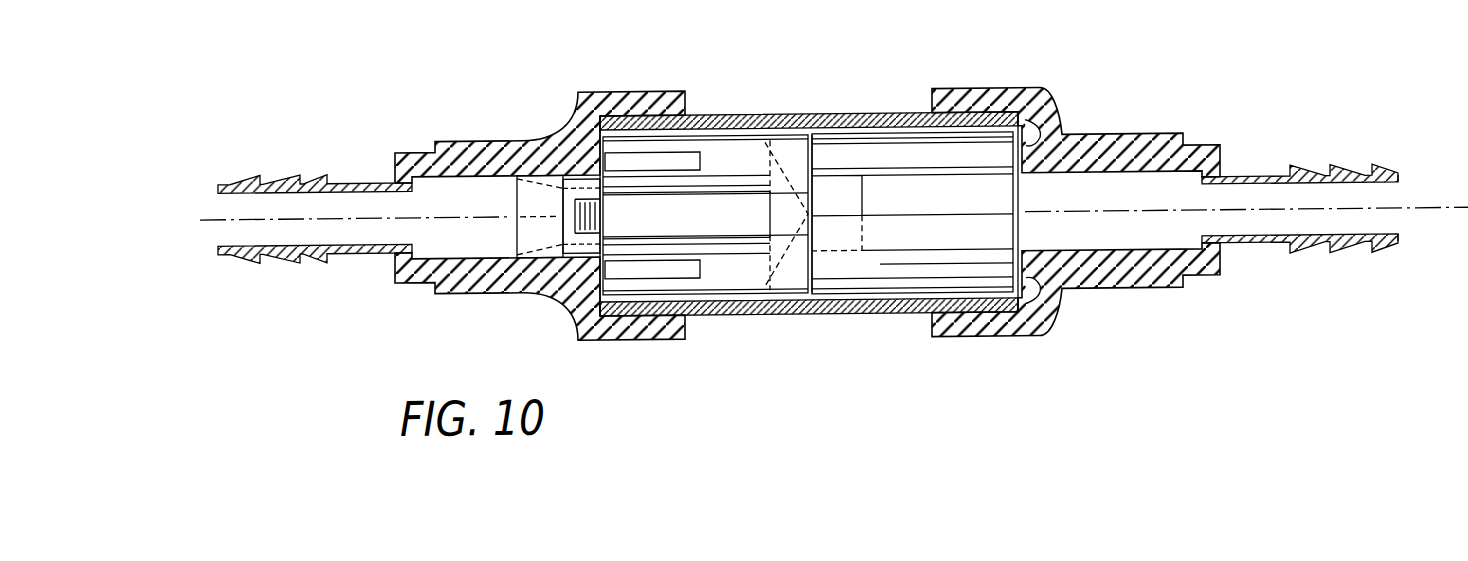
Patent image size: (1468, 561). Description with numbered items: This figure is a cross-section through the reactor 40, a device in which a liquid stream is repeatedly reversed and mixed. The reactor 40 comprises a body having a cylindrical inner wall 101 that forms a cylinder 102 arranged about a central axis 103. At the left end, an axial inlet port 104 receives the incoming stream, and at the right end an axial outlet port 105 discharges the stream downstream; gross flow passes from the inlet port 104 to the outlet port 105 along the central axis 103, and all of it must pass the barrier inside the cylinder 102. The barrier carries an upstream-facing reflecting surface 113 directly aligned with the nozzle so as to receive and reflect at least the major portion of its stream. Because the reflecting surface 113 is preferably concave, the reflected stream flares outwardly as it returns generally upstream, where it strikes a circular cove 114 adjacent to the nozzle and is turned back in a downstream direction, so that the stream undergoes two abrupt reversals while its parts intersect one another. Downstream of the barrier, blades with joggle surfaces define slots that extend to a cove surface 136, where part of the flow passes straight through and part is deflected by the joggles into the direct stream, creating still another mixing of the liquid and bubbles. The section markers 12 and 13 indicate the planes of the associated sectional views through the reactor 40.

The reactor 40 is at (815, 241).
The cylindrical inner wall 101 is at (740, 313).
The cylinder 102 is at (728, 117).
The central axis 103 is at (1430, 216).
The axial inlet port 104 is at (223, 227).
The axial outlet port 105 is at (1400, 194).
The reflecting surface 113 is at (765, 150).
The circular cove 114 is at (580, 278).
The cove surface 136 is at (1048, 114).
The section line 12- 12 is at (655, 98).
The section line 13- 13 is at (893, 114).